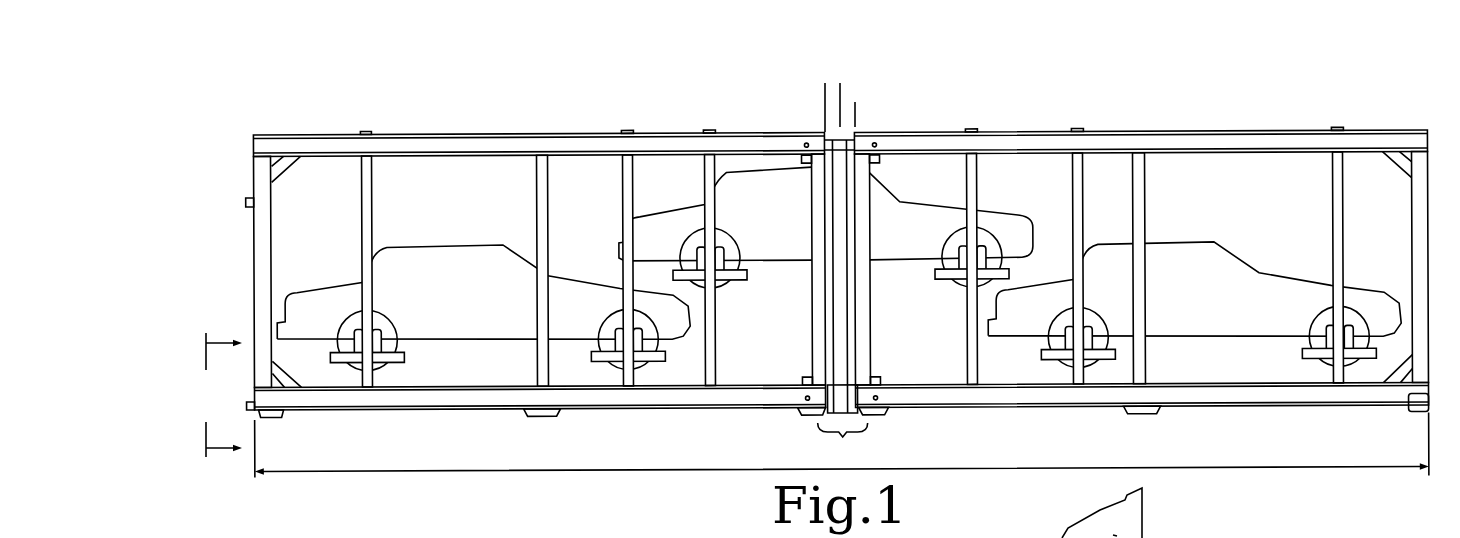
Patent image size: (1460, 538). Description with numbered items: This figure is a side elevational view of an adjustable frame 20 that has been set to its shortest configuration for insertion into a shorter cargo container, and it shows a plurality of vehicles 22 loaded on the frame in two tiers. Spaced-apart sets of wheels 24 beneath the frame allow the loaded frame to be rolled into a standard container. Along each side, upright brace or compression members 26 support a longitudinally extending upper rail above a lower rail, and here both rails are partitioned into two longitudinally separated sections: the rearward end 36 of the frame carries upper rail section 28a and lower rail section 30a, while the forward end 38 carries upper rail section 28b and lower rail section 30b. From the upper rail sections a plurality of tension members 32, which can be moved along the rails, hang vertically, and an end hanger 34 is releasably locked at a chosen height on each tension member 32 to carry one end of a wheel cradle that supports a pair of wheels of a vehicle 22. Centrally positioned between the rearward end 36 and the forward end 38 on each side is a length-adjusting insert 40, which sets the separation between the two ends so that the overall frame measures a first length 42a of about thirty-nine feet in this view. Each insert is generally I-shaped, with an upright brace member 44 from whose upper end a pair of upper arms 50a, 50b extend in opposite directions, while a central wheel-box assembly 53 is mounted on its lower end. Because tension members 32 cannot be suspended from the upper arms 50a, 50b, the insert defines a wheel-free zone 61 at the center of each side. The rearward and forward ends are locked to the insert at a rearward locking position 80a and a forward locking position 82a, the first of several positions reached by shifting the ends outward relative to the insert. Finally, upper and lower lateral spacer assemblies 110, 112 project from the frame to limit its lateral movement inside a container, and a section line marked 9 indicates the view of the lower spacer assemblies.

The section line of FIG. 9 is at (208, 394).
The adjustable frame 20 is at (781, 252).
The vehicle 22 is at (1050, 282).
The wheels 24 is at (535, 414).
The upright brace member 26 is at (1150, 166).
The upper rail section 28a is at (480, 136).
The upper rail section 28b is at (1248, 133).
The lower rail section 30a is at (687, 409).
The lower rail section 30b is at (1013, 408).
The tension member 32 is at (705, 172).
The end hanger 34 is at (680, 283).
The rearward end 36 is at (479, 255).
The forward end 38 is at (1141, 247).
The length-adjusting insert 40 is at (838, 252).
The first length 42a is at (1301, 468).
The upright brace member 44 is at (1127, 530).
The upper arm 50a is at (823, 167).
The upper arm 50b is at (860, 160).
The central wheel-box assembly 53 is at (823, 420).
The wheel-free zone 61 is at (842, 426).
The rearward locking position 80a is at (887, 92).
The forward locking position 82a is at (907, 110).
The upper lateral spacer assembly 110 is at (230, 205).
The lower lateral spacer assembly 112 is at (232, 398).